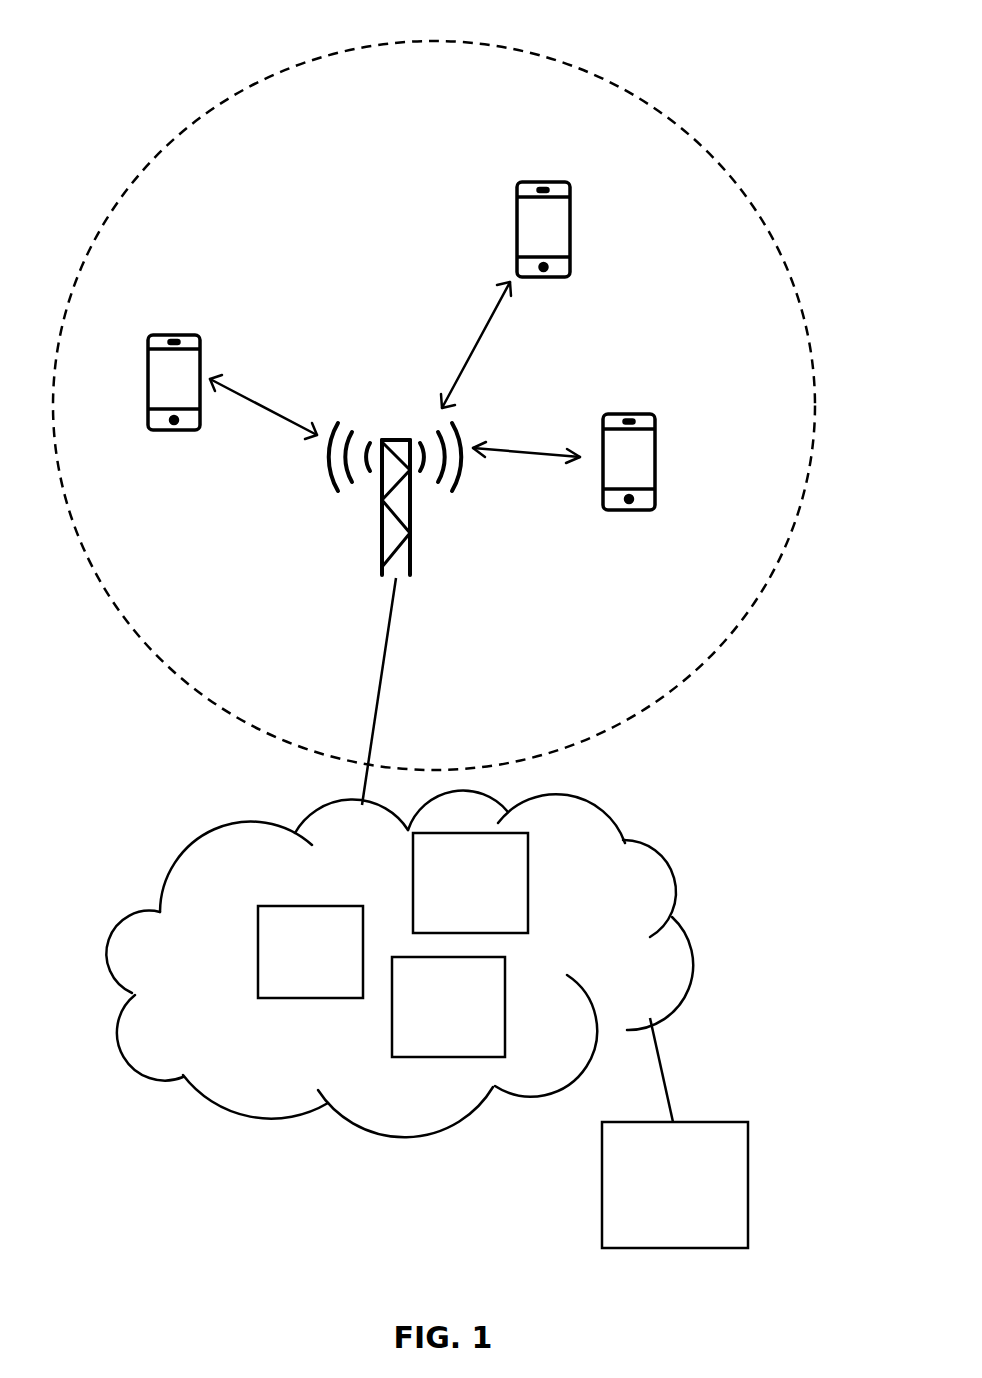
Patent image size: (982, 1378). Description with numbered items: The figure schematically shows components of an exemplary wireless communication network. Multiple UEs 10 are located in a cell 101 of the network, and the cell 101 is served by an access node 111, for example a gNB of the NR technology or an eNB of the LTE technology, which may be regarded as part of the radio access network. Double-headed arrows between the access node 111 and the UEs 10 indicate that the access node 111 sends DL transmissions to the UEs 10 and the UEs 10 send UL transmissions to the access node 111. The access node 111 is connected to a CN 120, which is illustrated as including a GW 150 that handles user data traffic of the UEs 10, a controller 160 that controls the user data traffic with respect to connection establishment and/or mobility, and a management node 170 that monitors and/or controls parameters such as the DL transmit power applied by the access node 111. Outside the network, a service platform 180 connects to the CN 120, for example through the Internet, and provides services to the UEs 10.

The cell 101 is at (556, 58).
The UE 10 is at (540, 180).
The access node 111 is at (378, 545).
The core network 120 is at (690, 965).
The gateway 150 is at (257, 948).
The controller 160 is at (532, 882).
The management node 170 is at (507, 1008).
The service platform 180 is at (750, 1187).